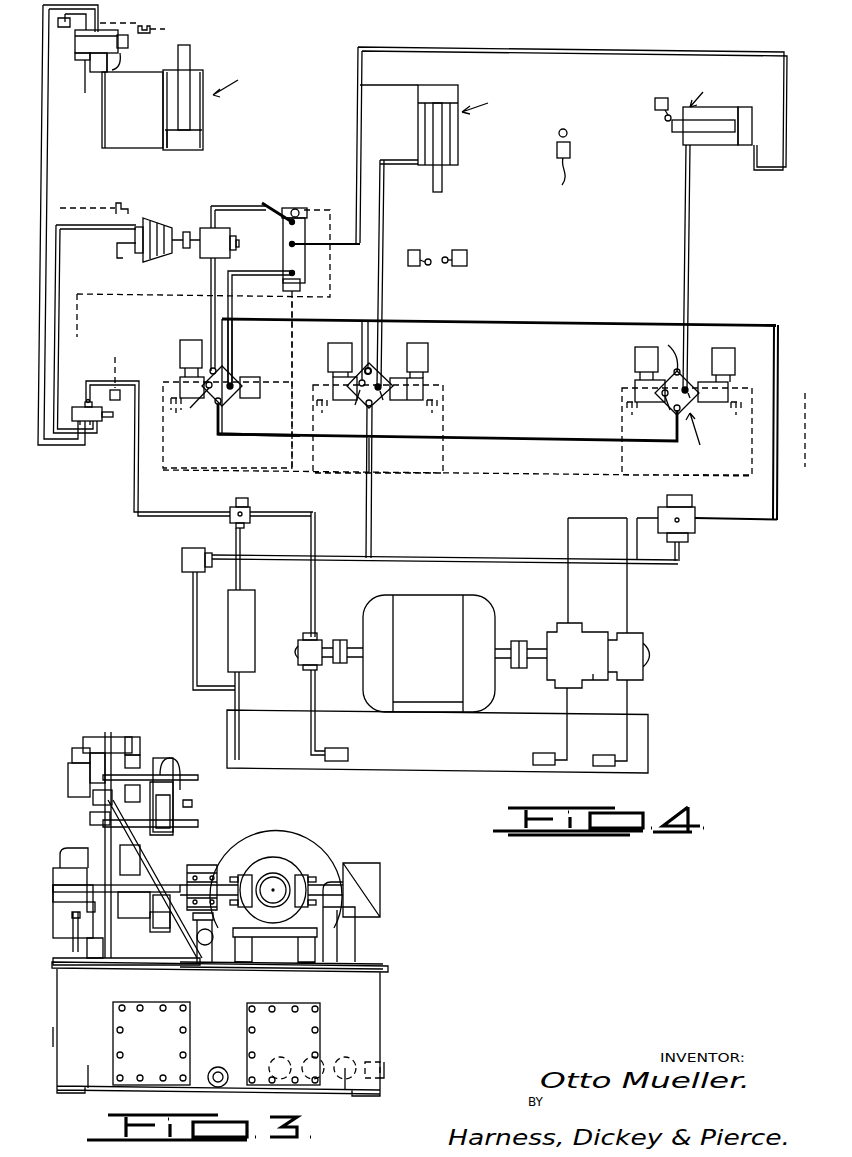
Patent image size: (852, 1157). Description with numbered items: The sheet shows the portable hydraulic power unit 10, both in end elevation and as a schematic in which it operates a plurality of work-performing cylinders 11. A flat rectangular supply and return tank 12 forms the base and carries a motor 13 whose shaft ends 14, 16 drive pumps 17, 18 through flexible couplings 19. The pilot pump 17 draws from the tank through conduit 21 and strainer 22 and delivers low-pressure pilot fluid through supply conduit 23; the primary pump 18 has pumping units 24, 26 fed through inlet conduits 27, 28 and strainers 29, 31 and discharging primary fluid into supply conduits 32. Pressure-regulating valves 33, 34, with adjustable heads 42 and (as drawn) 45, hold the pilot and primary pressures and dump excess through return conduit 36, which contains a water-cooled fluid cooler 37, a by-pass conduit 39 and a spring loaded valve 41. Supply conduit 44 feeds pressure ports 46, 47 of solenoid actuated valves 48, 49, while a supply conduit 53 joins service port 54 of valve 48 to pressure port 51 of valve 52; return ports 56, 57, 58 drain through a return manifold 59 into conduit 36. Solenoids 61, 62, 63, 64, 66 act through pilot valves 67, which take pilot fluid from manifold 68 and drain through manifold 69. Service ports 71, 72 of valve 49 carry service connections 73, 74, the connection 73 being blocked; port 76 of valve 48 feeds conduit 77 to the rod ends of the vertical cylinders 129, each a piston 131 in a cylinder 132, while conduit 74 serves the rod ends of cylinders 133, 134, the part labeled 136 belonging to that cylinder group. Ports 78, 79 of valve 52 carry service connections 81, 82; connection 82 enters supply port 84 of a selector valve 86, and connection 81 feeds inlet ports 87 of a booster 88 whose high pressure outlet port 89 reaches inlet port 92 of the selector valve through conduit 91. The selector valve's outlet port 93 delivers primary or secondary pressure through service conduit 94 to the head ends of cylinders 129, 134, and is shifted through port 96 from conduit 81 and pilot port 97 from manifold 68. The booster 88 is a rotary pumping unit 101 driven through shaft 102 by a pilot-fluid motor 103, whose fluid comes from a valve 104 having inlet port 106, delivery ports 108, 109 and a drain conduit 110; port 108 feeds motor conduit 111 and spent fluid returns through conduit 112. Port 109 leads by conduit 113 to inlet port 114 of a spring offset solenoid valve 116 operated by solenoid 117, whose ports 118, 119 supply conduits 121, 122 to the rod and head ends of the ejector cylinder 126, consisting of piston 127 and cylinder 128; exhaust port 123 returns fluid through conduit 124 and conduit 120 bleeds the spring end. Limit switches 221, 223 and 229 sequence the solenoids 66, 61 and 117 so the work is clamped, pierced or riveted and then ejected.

In FIG. 3, the power unit 10 is at (393, 1022).
In FIG. 4, the work-performing cylinders 11 is at (467, 91).
In FIG. 3, the supply and return fluid tank 12 is at (370, 998).
In FIG. 4, the motor 13 is at (430, 663).
In FIG. 3, the motor 13 is at (325, 850).
In FIG. 4, the drive shaft end 14 is at (341, 640).
In FIG. 4, the drive shaft end 16 is at (515, 641).
In FIG. 4, the pump 17 is at (313, 637).
In FIG. 4, the pump 18 is at (613, 634).
In FIG. 3, the pump 18 is at (280, 860).
In FIG. 4, the flexible couplings 19 is at (340, 663).
In FIG. 4, the conduit 21 is at (310, 685).
In FIG. 4, the strainer 22 is at (348, 755).
In FIG. 4, the supply conduit 23 is at (310, 580).
In FIG. 4, the pumping unit 24 is at (648, 655).
In FIG. 4, the pumping unit 26 is at (593, 675).
In FIG. 4, the inlet conduit 27 is at (650, 728).
In FIG. 4, the inlet conduit 28 is at (565, 722).
In FIG. 4, the strainer 29 is at (608, 755).
In FIG. 4, the strainer 31 is at (535, 757).
In FIG. 4, the supply conduits 32 is at (625, 585).
In FIG. 4, the pressure-regulating valve 33 is at (230, 515).
In FIG. 4, the pressure-regulating valve 34 is at (697, 530).
In FIG. 4, the return conduit 36 is at (242, 586).
In FIG. 4, the fluid cooler 37 is at (228, 622).
In FIG. 4, the by-pass conduit 39 is at (193, 655).
In FIG. 4, the spring loaded valve 41 is at (182, 558).
In FIG. 4, the adjustable pressure regulating head 42 is at (247, 499).
In FIG. 4, the supply conduit 44 is at (505, 321).
In FIG. 4, the adjusting screw 45 is at (690, 497).
In FIG. 4, the pressure port 46 is at (372, 367).
In FIG. 4, the pressure port 47 is at (682, 368).
In FIG. 4, the solenoid actuated valve 48 is at (382, 420).
In FIG. 4, the solenoid actuated valve 49 is at (696, 434).
In FIG. 3, the solenoid actuated valve 49 is at (60, 868).
In FIG. 4, the pressure port 51 is at (228, 372).
In FIG. 4, the solenoid actuated valve 52 is at (230, 413).
In FIG. 4, the supply conduit 53 is at (335, 319).
In FIG. 4, the service port 54 is at (355, 405).
In FIG. 4, the return port 56 is at (365, 440).
In FIG. 4, the return port 57 is at (670, 410).
In FIG. 4, the return port 58 is at (215, 433).
In FIG. 4, the return manifold 59 is at (482, 438).
In FIG. 4, the solenoid 61 is at (181, 352).
In FIG. 4, the solenoid 62 is at (328, 352).
In FIG. 4, the solenoid 63 is at (428, 355).
In FIG. 4, the solenoid 64 is at (635, 358).
In FIG. 4, the solenoid 66 is at (735, 360).
In FIG. 4, the valves 67 is at (182, 382).
In FIG. 4, the pilot fluid supply manifold 68 is at (292, 405).
In FIG. 4, the pilot fluid return manifold 69 is at (165, 412).
In FIG. 4, the service port 71 is at (664, 350).
In FIG. 4, the service port 72 is at (690, 398).
In FIG. 3, the service connection 73 is at (90, 825).
In FIG. 4, the service connection 74 is at (690, 240).
In FIG. 3, the service connection 74 is at (88, 855).
In FIG. 4, the service port 76 is at (383, 400).
In FIG. 4, the service conduit 77 is at (386, 240).
In FIG. 3, the service conduit 77 is at (87, 905).
In FIG. 4, the service port 78 is at (190, 408).
In FIG. 4, the service port 79 is at (258, 385).
In FIG. 4, the service connection 81 is at (130, 295).
In FIG. 4, the service connection 82 is at (233, 338).
In FIG. 4, the supply port 84 is at (286, 272).
In FIG. 4, the selector valve 86 is at (279, 224).
In FIG. 3, the selector valve 86 is at (68, 797).
In FIG. 4, the inlet ports 87 is at (211, 262).
In FIG. 4, the hydraulic fluid booster 88 is at (200, 230).
In FIG. 3, the hydraulic fluid booster 88 is at (180, 785).
In FIG. 4, the high pressure outlet port 89 is at (213, 206).
In FIG. 4, the service conduit 91 is at (230, 206).
In FIG. 4, the inlet port 92 is at (305, 213).
In FIG. 4, the outlet port 93 is at (296, 242).
In FIG. 4, the service conduit 94 is at (380, 85).
In FIG. 4, the port 96 is at (293, 208).
In FIG. 4, the inlet port 97 is at (282, 286).
In FIG. 4, the rotary pumping unit 101 is at (230, 228).
In FIG. 4, the shaft 102 is at (152, 220).
In FIG. 4, the fluid motor 103 is at (148, 218).
In FIG. 4, the valve 104 is at (82, 402).
In FIG. 4, the inlet port 106 is at (90, 400).
In FIG. 4, the port 108 is at (75, 425).
In FIG. 4, the port 109 is at (85, 428).
In FIG. 4, the drain conduit 110 is at (116, 375).
In FIG. 4, the conduit 111 is at (78, 287).
In FIG. 4, the exhaust conduit 112 is at (117, 238).
In FIG. 4, the conduit 113 is at (50, 132).
In FIG. 4, the inlet port 114 is at (150, 27).
In FIG. 4, the spring offset solenoid actuated valve 116 is at (86, 75).
In FIG. 3, the spring offset solenoid actuated valve 116 is at (100, 772).
In FIG. 4, the solenoid 117 is at (122, 52).
In FIG. 3, the solenoid 117 is at (72, 758).
In FIG. 4, the port 118 is at (85, 95).
In FIG. 4, the port 119 is at (109, 88).
In FIG. 4, the conduit 120 is at (164, 35).
In FIG. 4, the service conduit 121 is at (112, 72).
In FIG. 3, the service conduit 121 is at (90, 745).
In FIG. 4, the service conduit 122 is at (106, 128).
In FIG. 3, the service conduit 122 is at (93, 795).
In FIG. 4, the exhaust port 123 is at (80, 48).
In FIG. 4, the exhaust conduit 124 is at (100, 22).
In FIG. 4, the working cylinder 126 is at (197, 118).
In FIG. 4, the piston 127 is at (190, 58).
In FIG. 4, the cylinder 128 is at (200, 78).
In FIG. 4, the working cylinder 129 is at (448, 138).
In FIG. 4, the piston 131 is at (442, 158).
In FIG. 4, the cylinder 132 is at (440, 85).
In FIG. 4, the cylinders 133 is at (711, 147).
In FIG. 4, the cylinders 134 is at (722, 108).
In FIG. 4, the piston 136 is at (728, 132).
In FIG. 4, the limit switches 221 is at (460, 250).
In FIG. 4, the limit switch 223 is at (575, 162).
In FIG. 4, the limit switch 229 is at (655, 100).